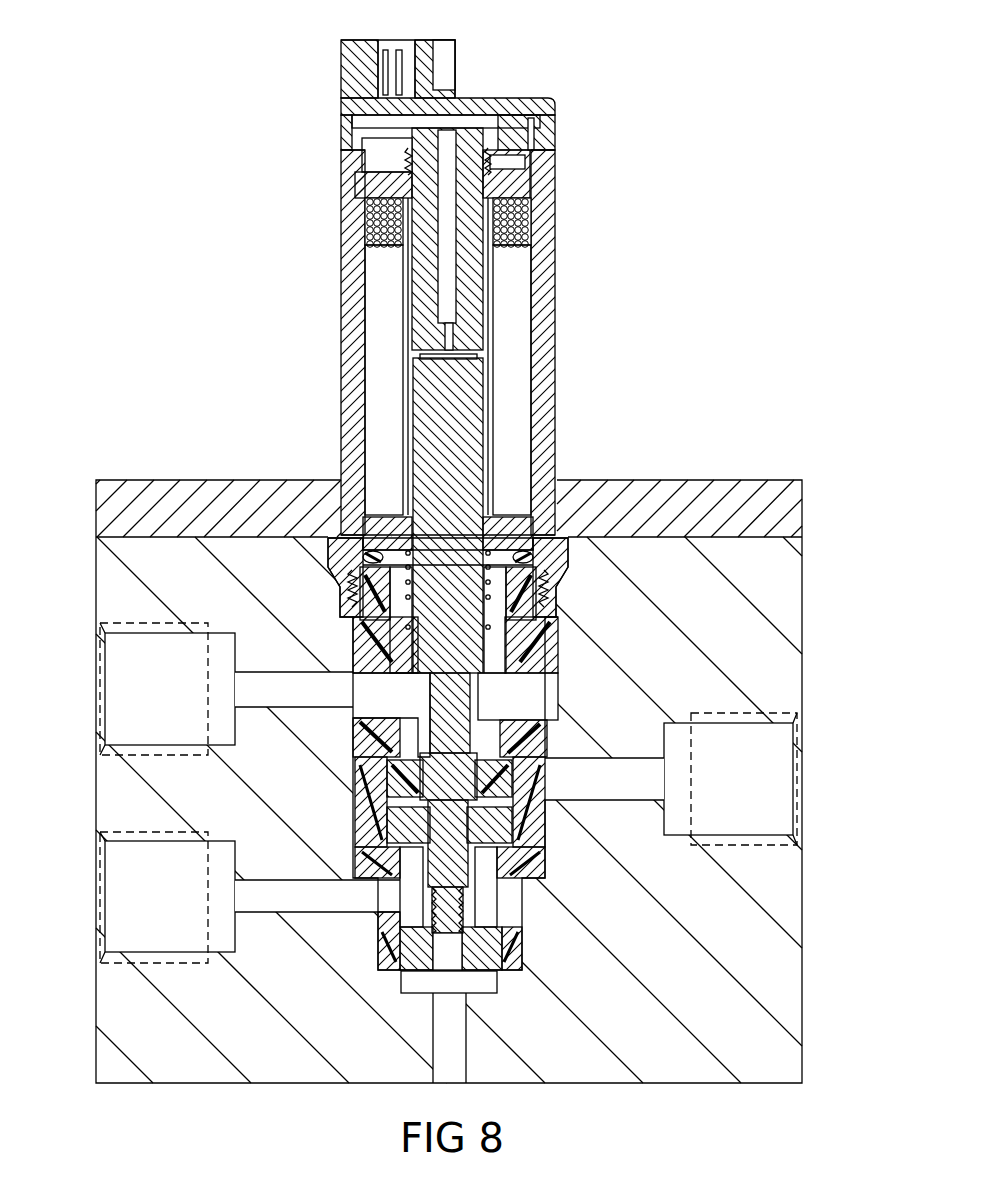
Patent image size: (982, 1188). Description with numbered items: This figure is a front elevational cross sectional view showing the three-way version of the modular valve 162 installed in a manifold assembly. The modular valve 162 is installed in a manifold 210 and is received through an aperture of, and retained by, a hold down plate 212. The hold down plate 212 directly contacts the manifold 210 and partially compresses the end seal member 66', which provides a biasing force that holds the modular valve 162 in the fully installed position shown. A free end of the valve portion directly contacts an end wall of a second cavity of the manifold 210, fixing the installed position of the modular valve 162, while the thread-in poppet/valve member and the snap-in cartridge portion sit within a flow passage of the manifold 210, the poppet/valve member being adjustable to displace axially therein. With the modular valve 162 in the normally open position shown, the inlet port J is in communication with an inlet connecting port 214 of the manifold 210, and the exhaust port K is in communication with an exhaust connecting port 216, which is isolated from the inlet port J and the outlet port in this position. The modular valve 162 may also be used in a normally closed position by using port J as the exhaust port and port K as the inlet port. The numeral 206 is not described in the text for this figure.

The modular valve 162 is at (623, 289).
The manifold block 206 is at (215, 495).
The manifold 210 is at (122, 697).
The hold down plate 212 is at (118, 896).
The inlet connecting port 214 is at (782, 779).
The exhaust connecting port 216 is at (449, 1066).
The end seal member 66' is at (482, 709).
The inlet port J is at (383, 695).
The exhaust port K is at (408, 897).